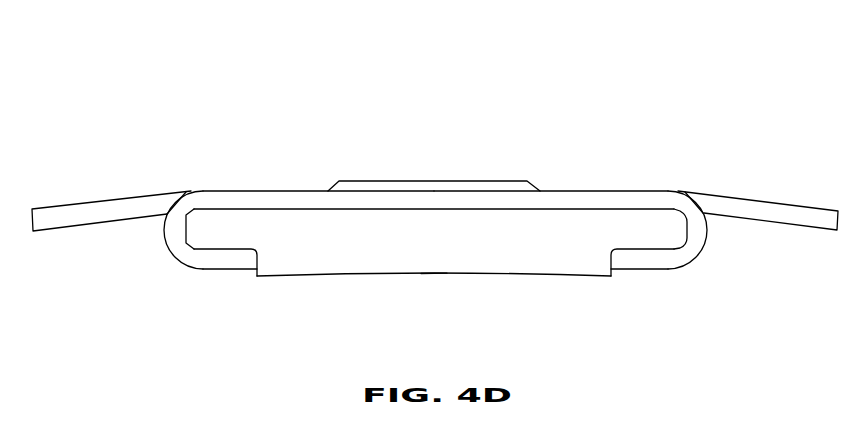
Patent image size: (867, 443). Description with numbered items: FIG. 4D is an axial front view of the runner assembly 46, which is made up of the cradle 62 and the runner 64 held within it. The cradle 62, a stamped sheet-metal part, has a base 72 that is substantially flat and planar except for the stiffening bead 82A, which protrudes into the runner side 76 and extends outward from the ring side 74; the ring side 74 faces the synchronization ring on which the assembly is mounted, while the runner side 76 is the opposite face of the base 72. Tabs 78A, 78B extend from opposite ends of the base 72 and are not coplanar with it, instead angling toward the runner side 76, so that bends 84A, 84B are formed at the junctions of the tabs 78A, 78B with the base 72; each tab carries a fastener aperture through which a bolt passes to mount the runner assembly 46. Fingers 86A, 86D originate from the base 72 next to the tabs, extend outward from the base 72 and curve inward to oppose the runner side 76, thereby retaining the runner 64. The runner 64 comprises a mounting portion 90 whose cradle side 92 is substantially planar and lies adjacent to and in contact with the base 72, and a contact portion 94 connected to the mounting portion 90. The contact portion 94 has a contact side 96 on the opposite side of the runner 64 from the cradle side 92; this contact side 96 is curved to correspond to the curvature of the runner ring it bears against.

The runner assembly 46 is at (435, 178).
The cradle 62 is at (243, 174).
The runner 64 is at (389, 294).
The base 72 is at (317, 188).
The ring side 74 is at (622, 188).
The runner side 76 is at (577, 209).
The tab 78A is at (102, 198).
The tab 78B is at (770, 200).
The stiffening bead 82A is at (432, 180).
The bend 84A is at (192, 189).
The bend 84B is at (676, 189).
The finger 86A is at (220, 264).
The finger 86D is at (672, 264).
The mounting portion 90 is at (197, 229).
The cradle side 92 is at (537, 204).
The contact portion 94 is at (315, 265).
The contact side 96 is at (460, 276).